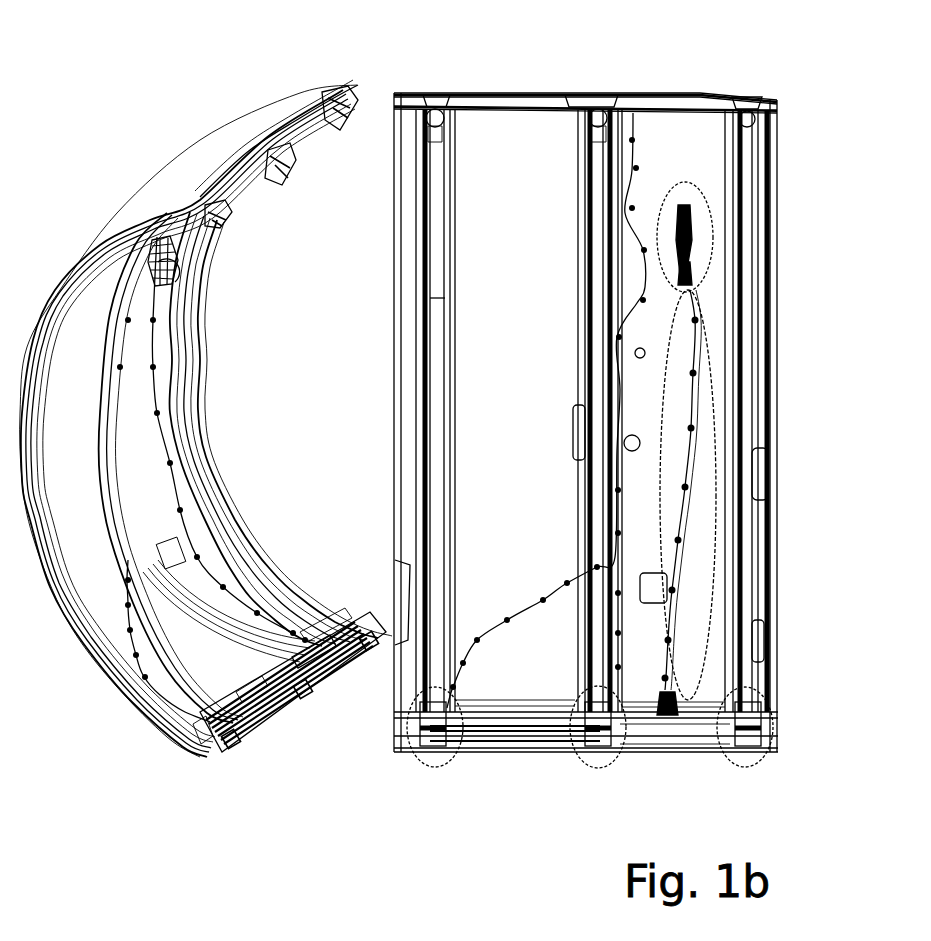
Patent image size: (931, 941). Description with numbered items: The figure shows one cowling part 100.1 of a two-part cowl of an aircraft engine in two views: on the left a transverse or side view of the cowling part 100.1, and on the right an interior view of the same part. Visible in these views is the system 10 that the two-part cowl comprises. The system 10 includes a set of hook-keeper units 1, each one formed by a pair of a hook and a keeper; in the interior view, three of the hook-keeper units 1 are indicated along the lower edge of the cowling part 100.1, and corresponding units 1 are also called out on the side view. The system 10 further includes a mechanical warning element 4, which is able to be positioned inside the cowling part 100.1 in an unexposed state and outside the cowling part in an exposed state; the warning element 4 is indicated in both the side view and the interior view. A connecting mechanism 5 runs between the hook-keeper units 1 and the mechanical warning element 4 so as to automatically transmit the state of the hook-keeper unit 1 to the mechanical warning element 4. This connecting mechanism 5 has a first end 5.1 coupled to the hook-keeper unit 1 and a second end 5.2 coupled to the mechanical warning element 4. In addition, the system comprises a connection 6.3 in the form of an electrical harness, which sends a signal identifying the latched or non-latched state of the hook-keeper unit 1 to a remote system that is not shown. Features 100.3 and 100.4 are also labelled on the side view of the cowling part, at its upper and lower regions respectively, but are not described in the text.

The hook-keeper unit 1 is at (372, 655).
The mechanical warning element 4 is at (165, 274).
The connecting mechanism 5 is at (720, 418).
The first end 5.1 is at (702, 700).
The second end 5.2 is at (697, 278).
The connection 6.3 is at (647, 282).
The system 10 is at (703, 74).
The cowling part 100.1 is at (72, 262).
The upper brackets 100.3 is at (345, 100).
The lower cross member 100.4 is at (201, 765).